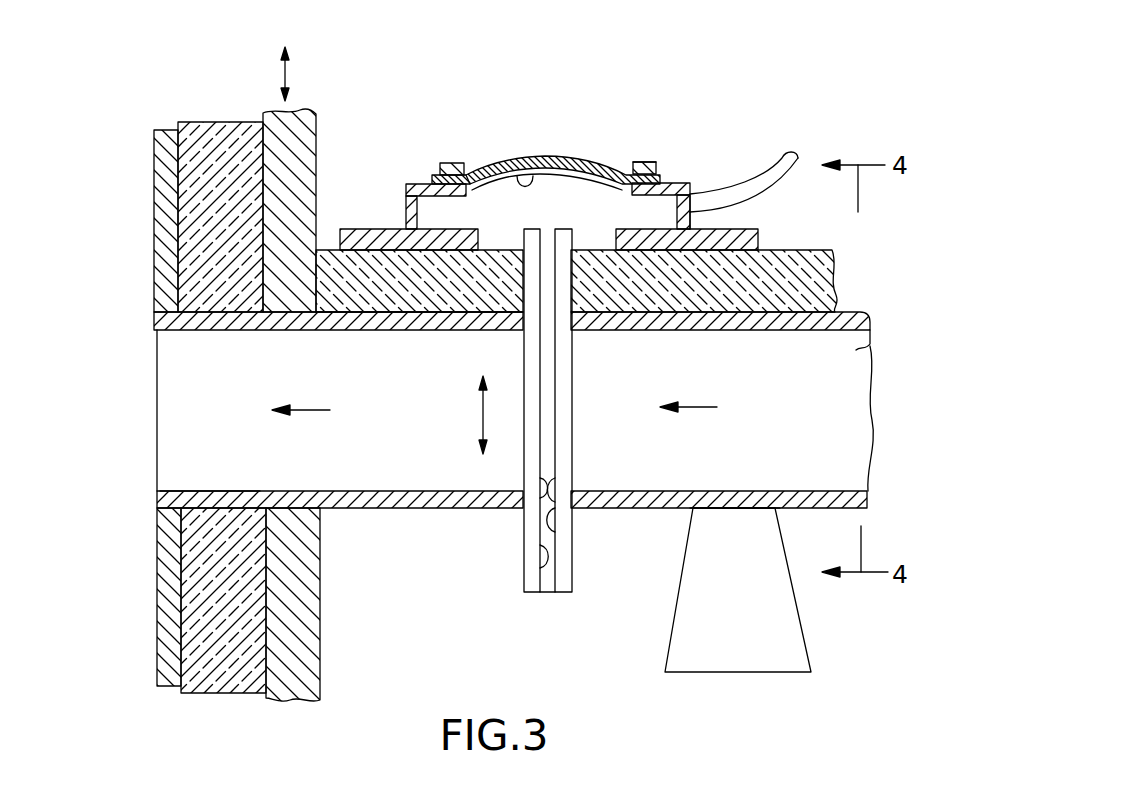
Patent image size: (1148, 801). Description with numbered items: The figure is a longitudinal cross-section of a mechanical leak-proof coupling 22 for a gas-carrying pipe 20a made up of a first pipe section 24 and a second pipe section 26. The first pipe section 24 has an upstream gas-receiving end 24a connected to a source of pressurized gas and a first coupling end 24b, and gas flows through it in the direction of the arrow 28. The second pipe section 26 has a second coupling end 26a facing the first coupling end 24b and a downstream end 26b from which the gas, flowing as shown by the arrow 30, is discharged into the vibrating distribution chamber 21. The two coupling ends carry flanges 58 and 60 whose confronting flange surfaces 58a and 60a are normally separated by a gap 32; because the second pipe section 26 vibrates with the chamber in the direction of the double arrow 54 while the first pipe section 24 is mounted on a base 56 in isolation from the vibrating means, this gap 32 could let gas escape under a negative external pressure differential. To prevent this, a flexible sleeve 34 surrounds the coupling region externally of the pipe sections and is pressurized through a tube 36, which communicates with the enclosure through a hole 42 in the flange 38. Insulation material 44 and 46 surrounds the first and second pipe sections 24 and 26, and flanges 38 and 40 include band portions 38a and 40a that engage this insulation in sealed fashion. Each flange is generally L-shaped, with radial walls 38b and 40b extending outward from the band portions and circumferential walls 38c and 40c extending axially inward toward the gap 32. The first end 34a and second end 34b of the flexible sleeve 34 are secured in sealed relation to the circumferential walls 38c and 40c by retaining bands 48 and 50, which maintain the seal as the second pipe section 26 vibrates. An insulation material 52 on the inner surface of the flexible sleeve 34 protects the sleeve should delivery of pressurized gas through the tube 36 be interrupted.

The gas-carrying pipe 20a is at (743, 522).
The vibrating distribution chamber 21 is at (88, 417).
The leak-proof coupling 22 is at (576, 94).
The first pipe section 24 is at (660, 330).
The upstream gas-receiving end 24a is at (872, 346).
The first coupling end 24b is at (560, 488).
The second pipe section 26 is at (378, 500).
The second coupling end 26a is at (525, 502).
The downstream end 26b is at (192, 482).
The arrow 28 is at (700, 407).
The arrow 30 is at (310, 408).
The gap 32 is at (548, 594).
The flexible sleeve 34 is at (560, 157).
The first end of flexible sleeve 34a is at (617, 165).
The second end of flexible sleeve 34b is at (466, 186).
The tube 36 is at (774, 152).
The flange 38 is at (726, 155).
The band portion 38a is at (757, 236).
The radial wall 38b is at (715, 180).
The circumferential wall 38c is at (668, 176).
The flange 40 is at (399, 147).
The band portion 40a is at (366, 228).
The radial wall 40b is at (406, 207).
The circumferential wall 40c is at (430, 183).
The hole 42 is at (678, 205).
The insulation material 44 is at (800, 275).
The insulation material 46 is at (366, 308).
The retaining band 48 is at (648, 161).
The retaining band 50 is at (453, 163).
The insulation material 52 is at (529, 174).
The double arrow 54 is at (482, 418).
The base 56 is at (800, 650).
The flange 58 is at (566, 576).
The confronting flange surface 58a is at (546, 530).
The flange 60 is at (524, 535).
The confronting flange surface 60a is at (526, 576).